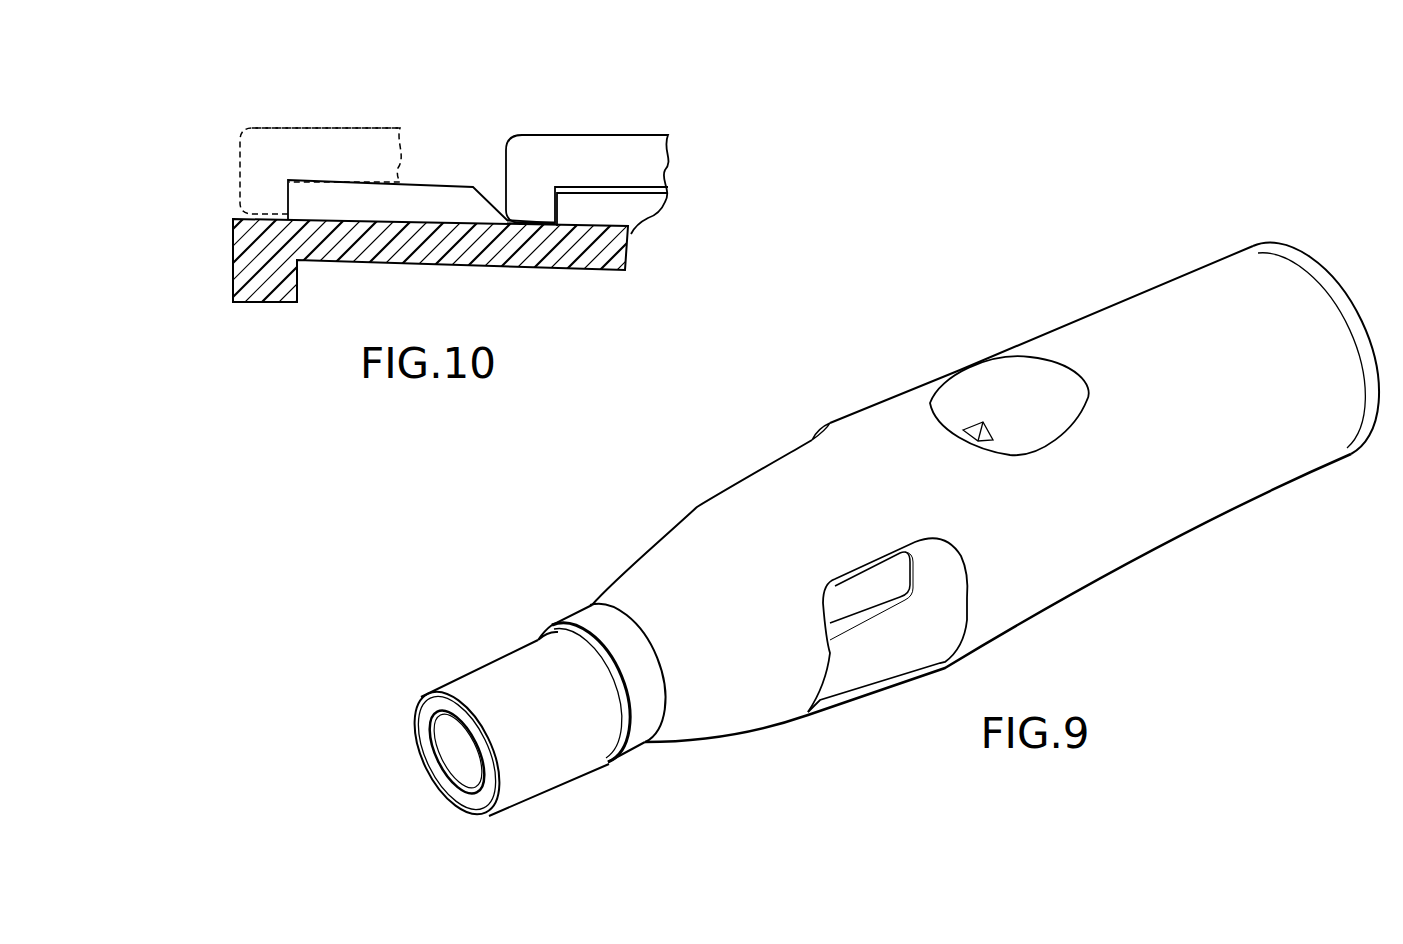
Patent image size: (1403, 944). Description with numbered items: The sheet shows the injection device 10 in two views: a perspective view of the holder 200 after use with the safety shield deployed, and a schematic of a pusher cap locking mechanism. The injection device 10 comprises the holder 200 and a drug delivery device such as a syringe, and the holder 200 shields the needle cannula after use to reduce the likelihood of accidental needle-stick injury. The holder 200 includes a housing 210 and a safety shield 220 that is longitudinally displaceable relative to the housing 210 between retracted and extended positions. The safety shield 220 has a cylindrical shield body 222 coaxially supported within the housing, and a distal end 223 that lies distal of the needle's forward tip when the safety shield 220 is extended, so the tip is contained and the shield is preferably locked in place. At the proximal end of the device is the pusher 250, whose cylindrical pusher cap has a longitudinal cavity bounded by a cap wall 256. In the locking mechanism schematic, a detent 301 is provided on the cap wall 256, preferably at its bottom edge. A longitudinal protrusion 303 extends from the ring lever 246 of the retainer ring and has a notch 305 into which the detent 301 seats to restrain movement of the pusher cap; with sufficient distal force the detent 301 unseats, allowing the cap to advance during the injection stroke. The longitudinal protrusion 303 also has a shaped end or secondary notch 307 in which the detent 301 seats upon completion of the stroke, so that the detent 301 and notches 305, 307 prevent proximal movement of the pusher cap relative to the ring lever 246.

In FIG. 9, the injection device 10 is at (875, 535).
In FIG. 9, the holder 200 is at (877, 393).
In FIG. 9, the housing 210 is at (1097, 308).
In FIG. 9, the safety shield 220 is at (540, 787).
In FIG. 9, the shield body 222 is at (503, 658).
In FIG. 9, the distal end 223 is at (418, 725).
In FIG. 9, the pusher 250 is at (1320, 270).
In FIG. 10, the cap wall 256 is at (340, 150).
In FIG. 10, the detent 301 is at (253, 181).
In FIG. 10, the longitudinal protrusion 303 is at (403, 207).
In FIG. 10, the notch 305 is at (567, 233).
In FIG. 10, the secondary notch 307 is at (283, 212).
In FIG. 10, the ring lever 246 is at (543, 226).